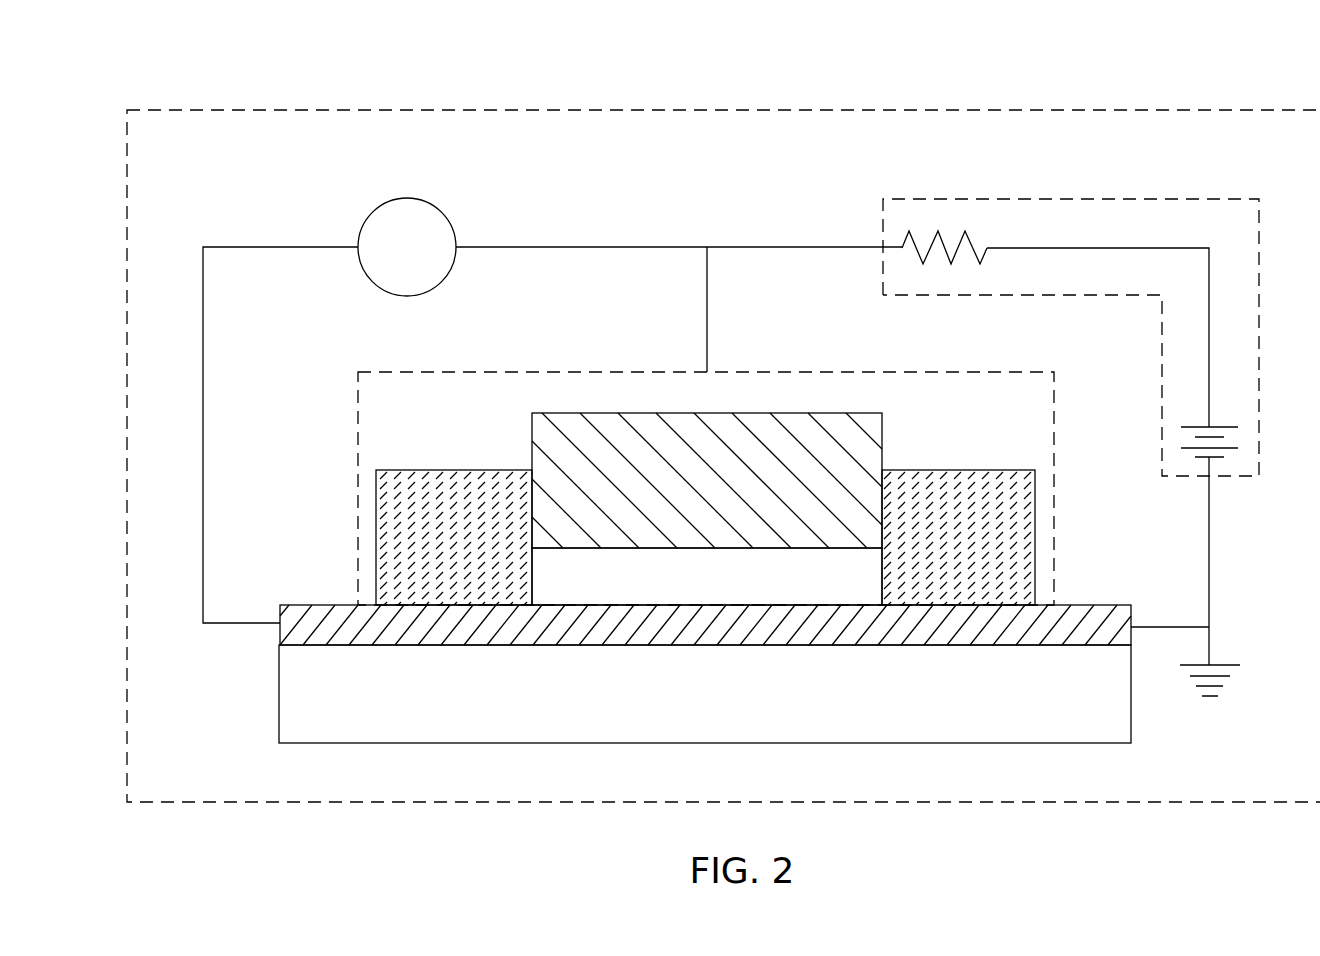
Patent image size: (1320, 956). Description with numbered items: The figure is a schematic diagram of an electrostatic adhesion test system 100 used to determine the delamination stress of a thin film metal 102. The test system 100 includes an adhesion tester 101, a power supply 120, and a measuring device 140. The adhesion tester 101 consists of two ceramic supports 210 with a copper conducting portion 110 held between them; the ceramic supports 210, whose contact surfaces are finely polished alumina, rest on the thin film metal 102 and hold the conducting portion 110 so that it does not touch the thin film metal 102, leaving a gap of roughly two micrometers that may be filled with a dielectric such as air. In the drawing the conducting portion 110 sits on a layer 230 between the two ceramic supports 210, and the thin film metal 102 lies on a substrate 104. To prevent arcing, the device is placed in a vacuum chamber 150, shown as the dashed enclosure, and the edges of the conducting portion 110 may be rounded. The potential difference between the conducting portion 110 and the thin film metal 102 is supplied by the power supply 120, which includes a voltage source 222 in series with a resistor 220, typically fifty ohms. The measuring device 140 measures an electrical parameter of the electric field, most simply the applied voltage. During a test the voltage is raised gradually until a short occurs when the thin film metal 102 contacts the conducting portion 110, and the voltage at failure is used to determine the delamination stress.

The electrostatic adhesion test system 100 is at (1175, 72).
The adhesion tester 101 is at (367, 413).
The thin film metal 102 is at (290, 634).
The substrate 104 is at (682, 706).
The conducting portion 110 is at (882, 452).
The power supply 120 is at (1197, 237).
The measuring device 140 is at (384, 263).
The vacuum chamber 150 is at (1268, 793).
The ceramic supports 210 is at (378, 588).
The resistor 220 is at (940, 232).
The voltage source 222 is at (1200, 452).
The layer 230 is at (682, 591).